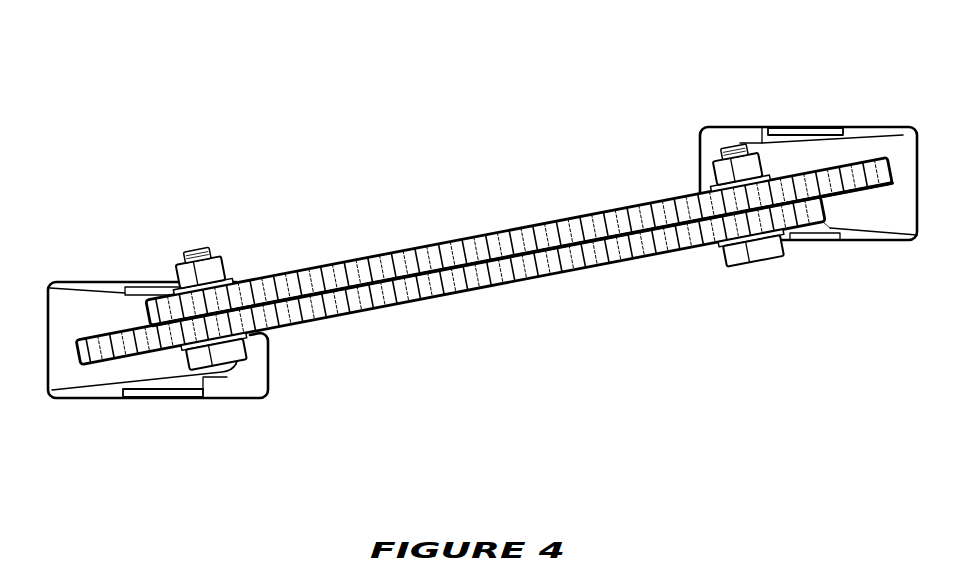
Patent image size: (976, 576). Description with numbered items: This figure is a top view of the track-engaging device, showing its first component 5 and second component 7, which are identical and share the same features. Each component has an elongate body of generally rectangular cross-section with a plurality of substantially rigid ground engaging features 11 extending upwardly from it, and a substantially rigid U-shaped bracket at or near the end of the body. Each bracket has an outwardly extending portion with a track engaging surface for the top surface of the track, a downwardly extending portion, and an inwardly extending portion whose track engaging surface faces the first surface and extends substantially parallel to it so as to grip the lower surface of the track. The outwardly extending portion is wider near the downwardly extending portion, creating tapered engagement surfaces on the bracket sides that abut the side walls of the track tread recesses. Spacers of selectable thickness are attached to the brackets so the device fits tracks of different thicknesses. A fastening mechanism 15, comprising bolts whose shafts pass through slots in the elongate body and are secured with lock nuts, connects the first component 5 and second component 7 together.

The first component 5 is at (192, 358).
The second component 7 is at (820, 160).
The ground engaging features 11 is at (407, 252).
The fastening mechanism 15 is at (429, 217).